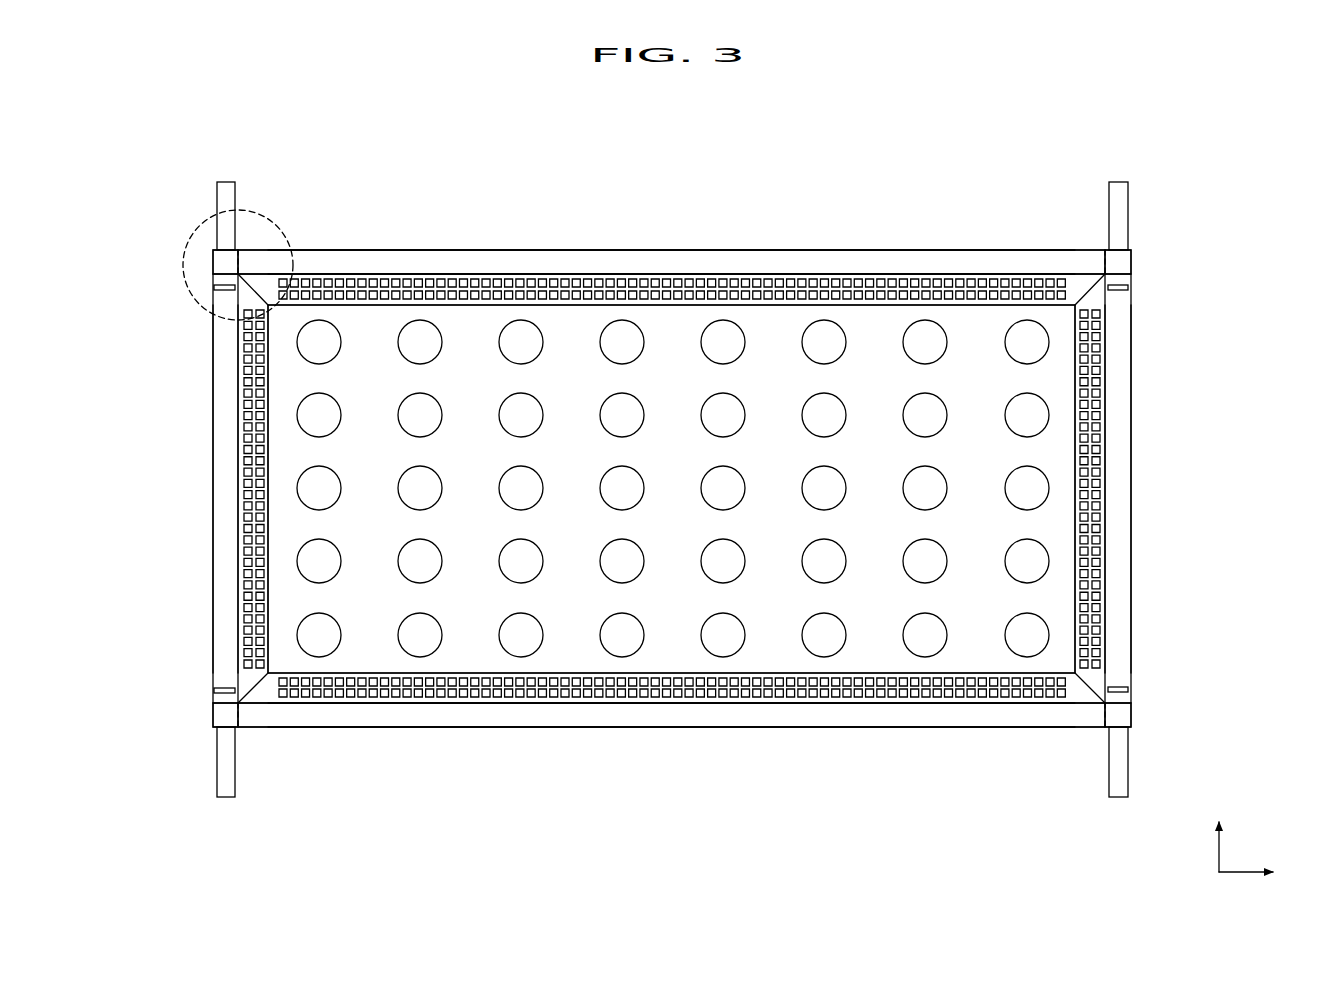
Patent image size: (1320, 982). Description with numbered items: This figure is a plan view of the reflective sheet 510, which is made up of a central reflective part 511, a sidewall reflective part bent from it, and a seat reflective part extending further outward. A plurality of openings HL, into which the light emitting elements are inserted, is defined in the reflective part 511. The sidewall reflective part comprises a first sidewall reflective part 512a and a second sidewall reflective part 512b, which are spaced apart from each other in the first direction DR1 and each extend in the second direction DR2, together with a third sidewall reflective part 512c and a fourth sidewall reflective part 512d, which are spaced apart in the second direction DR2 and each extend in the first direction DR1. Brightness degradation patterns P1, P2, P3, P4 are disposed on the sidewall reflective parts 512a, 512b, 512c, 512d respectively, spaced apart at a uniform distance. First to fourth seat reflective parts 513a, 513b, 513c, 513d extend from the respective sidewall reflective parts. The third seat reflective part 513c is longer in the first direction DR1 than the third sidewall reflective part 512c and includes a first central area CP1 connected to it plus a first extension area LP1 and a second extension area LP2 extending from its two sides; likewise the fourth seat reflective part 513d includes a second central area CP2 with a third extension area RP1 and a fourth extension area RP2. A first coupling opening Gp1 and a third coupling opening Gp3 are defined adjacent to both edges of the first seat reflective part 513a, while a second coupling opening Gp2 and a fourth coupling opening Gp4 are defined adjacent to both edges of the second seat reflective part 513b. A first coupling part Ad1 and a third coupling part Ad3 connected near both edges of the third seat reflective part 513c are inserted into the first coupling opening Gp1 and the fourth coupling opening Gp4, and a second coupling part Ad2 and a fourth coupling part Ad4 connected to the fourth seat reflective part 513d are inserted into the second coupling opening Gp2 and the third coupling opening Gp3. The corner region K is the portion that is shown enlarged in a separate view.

The reflective sheet 510 is at (1020, 165).
The reflective part 511 is at (283, 603).
The first sidewall reflective part 512a is at (1105, 523).
The second sidewall reflective part 512b is at (240, 522).
The third sidewall reflective part 512c is at (605, 281).
The fourth sidewall reflective part 512d is at (605, 697).
The first seat reflective part 513a is at (1125, 490).
The second seat reflective part 513b is at (218, 489).
The third seat reflective part 513c is at (710, 262).
The fourth seat reflective part 513d is at (709, 717).
The brightness degradation pattern P1 is at (1102, 568).
The brightness degradation pattern P2 is at (243, 569).
The brightness degradation pattern P3 is at (500, 281).
The brightness degradation pattern P4 is at (498, 697).
The first coupling part Ad1 is at (1120, 212).
The second coupling part Ad2 is at (223, 757).
The third coupling part Ad3 is at (223, 194).
The fourth coupling part Ad4 is at (1120, 757).
The first extension area LP1 is at (1120, 260).
The second extension area LP2 is at (230, 262).
The third extension area RP1 is at (1120, 716).
The fourth extension area RP2 is at (230, 716).
The first coupling opening Gp1 is at (1120, 288).
The second coupling opening Gp2 is at (222, 690).
The third coupling opening Gp3 is at (1125, 690).
The fourth coupling opening Gp4 is at (222, 287).
The first central area CP1 is at (926, 262).
The second central area CP2 is at (926, 717).
The opening HL is at (423, 648).
The region K is at (184, 250).
The first direction DR1 is at (1269, 873).
The second direction DR2 is at (1222, 831).